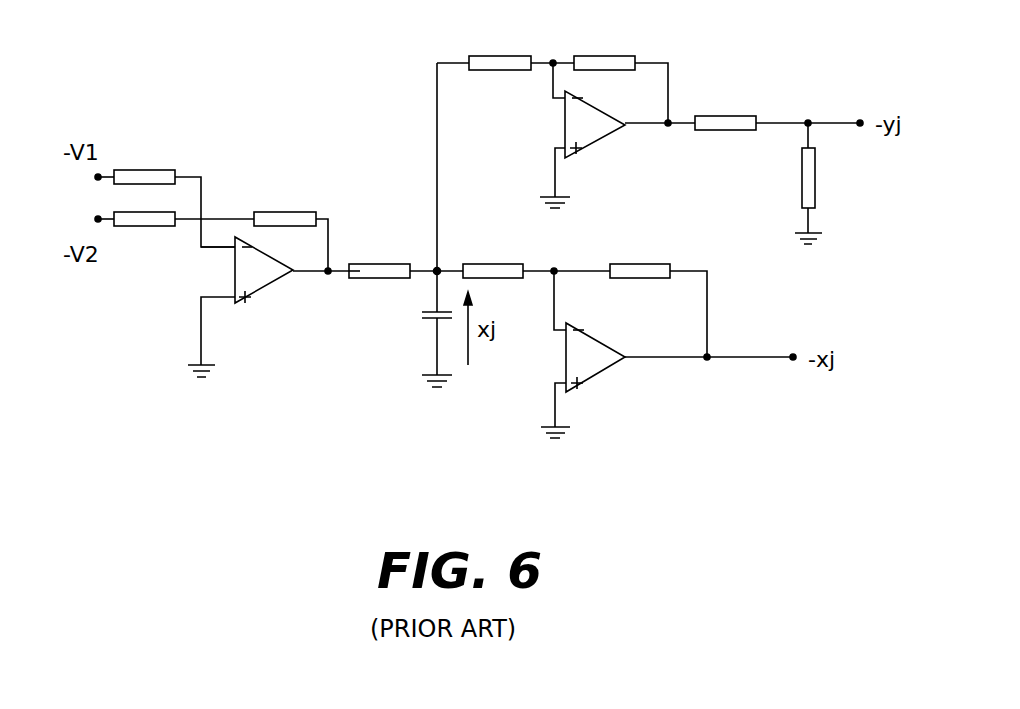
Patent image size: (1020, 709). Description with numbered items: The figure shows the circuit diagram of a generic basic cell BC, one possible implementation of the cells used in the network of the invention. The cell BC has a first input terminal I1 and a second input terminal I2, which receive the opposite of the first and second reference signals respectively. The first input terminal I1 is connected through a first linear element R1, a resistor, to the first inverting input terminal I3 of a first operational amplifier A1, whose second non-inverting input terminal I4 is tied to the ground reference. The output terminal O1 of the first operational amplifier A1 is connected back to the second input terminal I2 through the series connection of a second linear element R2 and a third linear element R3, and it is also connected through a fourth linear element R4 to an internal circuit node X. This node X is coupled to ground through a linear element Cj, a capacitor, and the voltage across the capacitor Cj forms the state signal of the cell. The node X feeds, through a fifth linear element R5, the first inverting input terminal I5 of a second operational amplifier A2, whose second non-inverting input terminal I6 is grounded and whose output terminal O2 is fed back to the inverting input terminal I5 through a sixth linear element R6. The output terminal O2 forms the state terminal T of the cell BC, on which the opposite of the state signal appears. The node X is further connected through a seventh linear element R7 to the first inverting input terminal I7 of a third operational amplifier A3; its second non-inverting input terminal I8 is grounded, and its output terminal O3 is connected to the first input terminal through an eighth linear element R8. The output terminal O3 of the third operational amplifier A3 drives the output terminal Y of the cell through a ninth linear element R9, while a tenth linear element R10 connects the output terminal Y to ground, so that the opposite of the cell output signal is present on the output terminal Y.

The first input terminal I1 is at (95, 177).
The second input terminal I2 is at (95, 219).
The first linear element R1 is at (174, 193).
The second linear element R2 is at (184, 236).
The third linear element R3 is at (291, 228).
The fourth linear element R4 is at (406, 258).
The fifth linear element R5 is at (536, 258).
The sixth linear element R6 is at (658, 297).
The seventh linear element R7 is at (505, 51).
The eighth linear element R8 is at (621, 77).
The ninth linear element R9 is at (777, 111).
The tenth linear element R10 is at (829, 201).
The first operational amplifier A1 is at (264, 270).
The second operational amplifier A2 is at (595, 357).
The third operational amplifier A3 is at (595, 124).
The first inverting input terminal I3 is at (235, 248).
The second non-inverting input terminal I4 is at (236, 300).
The first inverting input terminal I5 is at (564, 331).
The second non-inverting input terminal I6 is at (564, 384).
The first inverting input terminal I7 is at (563, 98).
The second non-inverting input terminal I8 is at (563, 148).
The output terminal O1 is at (293, 271).
The output terminal O2 is at (625, 357).
The output terminal O3 is at (625, 125).
The linear element Cj is at (427, 360).
The internal circuit node X is at (435, 268).
The output terminal Y is at (859, 120).
The state terminal T is at (794, 360).
The basic cell BC is at (338, 390).